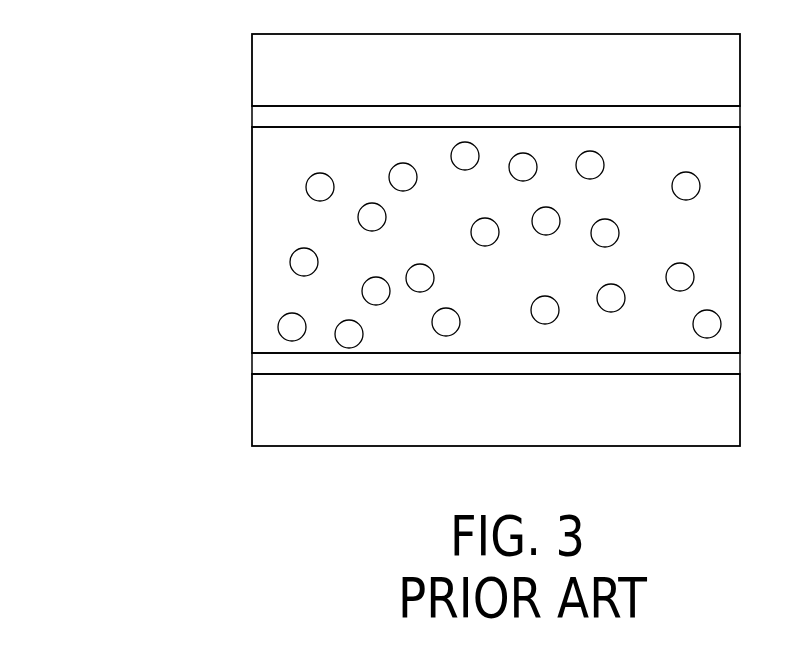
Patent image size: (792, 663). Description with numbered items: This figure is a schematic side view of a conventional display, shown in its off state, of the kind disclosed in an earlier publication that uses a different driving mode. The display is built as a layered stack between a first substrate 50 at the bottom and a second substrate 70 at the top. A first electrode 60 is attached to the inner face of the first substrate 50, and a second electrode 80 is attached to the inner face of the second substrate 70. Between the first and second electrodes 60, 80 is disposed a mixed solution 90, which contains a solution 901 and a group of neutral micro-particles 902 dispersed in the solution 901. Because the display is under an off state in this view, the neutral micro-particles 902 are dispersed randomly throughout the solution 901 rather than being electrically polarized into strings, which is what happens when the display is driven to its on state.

The first substrate 50 is at (285, 414).
The first electrode 60 is at (261, 364).
The second substrate 70 is at (265, 70).
The second electrode 80 is at (259, 115).
The mixed solution 90 is at (403, 240).
The solution 901 is at (272, 188).
The neutral micro-particles 902 is at (302, 261).